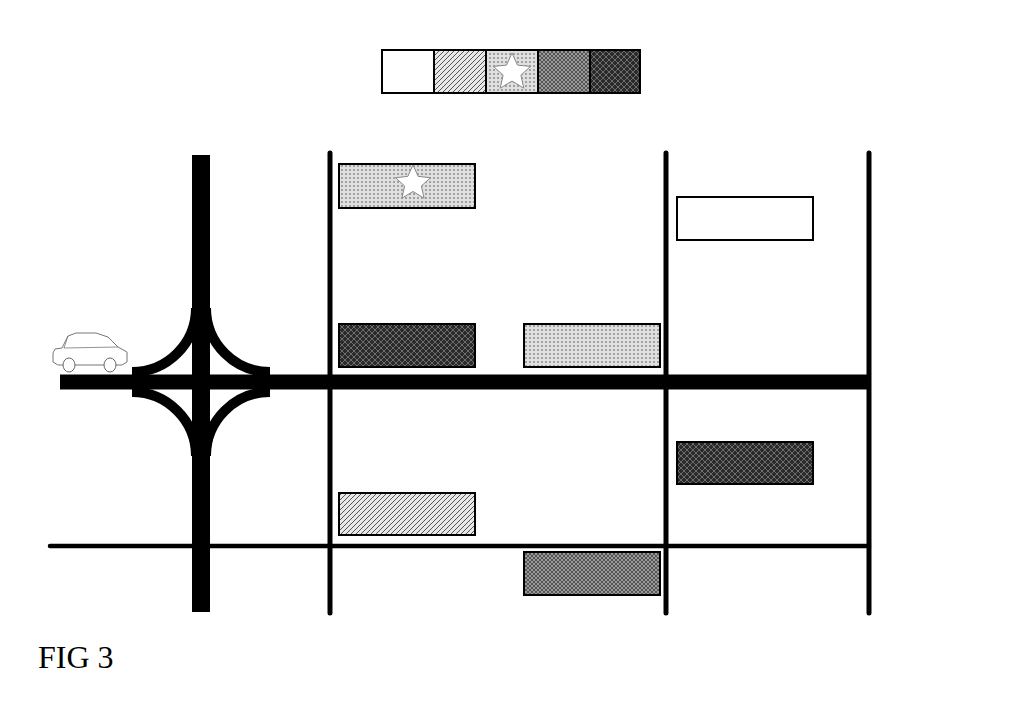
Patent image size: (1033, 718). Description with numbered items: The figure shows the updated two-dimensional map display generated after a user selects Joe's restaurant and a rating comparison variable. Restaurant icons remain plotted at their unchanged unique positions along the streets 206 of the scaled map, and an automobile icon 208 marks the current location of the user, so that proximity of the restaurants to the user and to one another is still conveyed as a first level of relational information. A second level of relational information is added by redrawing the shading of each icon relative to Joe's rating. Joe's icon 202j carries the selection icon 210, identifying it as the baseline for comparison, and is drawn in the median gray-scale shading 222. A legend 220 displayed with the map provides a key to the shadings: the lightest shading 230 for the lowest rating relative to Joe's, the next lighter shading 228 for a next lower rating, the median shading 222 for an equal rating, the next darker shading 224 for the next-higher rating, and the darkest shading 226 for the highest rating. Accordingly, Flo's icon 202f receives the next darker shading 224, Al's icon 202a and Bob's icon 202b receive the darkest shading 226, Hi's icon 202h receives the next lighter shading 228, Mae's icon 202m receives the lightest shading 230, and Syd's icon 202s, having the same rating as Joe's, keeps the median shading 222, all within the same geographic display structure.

The Al's icon 202a is at (730, 484).
The Bob's icon 202b is at (422, 324).
The Flo's icon 202f is at (592, 595).
The Hi's icon 202h is at (438, 493).
The Joe's icon 202j is at (441, 208).
The Mae's icon 202m is at (743, 240).
The Syd's icon 202s is at (573, 324).
The streets 206 is at (742, 546).
The automobile icon 208 is at (88, 335).
The selection icon 210 is at (430, 176).
The legend 220 is at (558, 80).
The median gray-scale shading 222 is at (510, 93).
The next darker shading 224 is at (563, 50).
The darkest shading 226 is at (640, 72).
The next lighter shading 228 is at (460, 50).
The lightest shading 230 is at (382, 72).